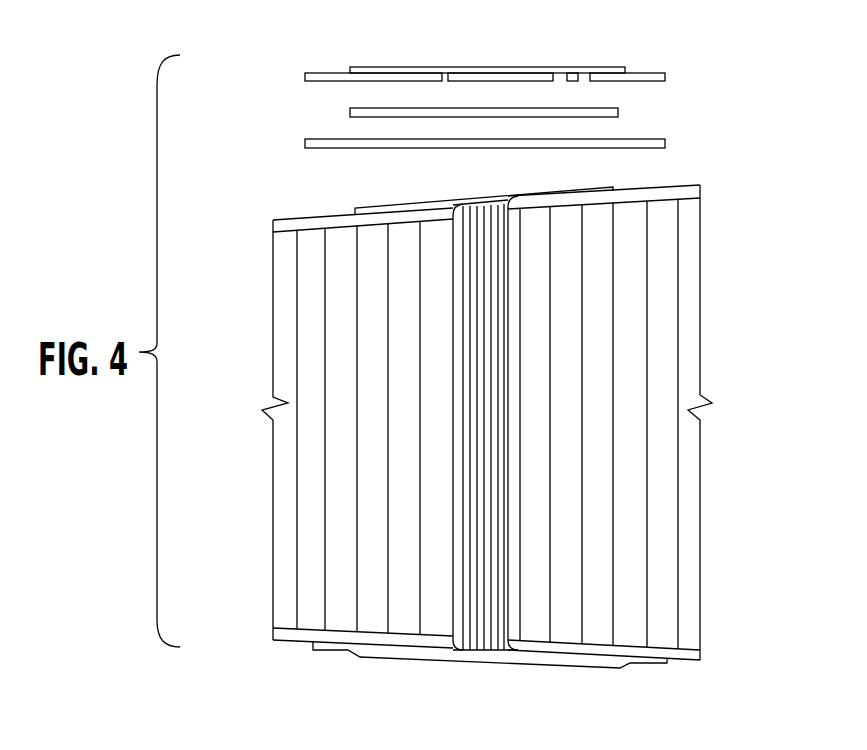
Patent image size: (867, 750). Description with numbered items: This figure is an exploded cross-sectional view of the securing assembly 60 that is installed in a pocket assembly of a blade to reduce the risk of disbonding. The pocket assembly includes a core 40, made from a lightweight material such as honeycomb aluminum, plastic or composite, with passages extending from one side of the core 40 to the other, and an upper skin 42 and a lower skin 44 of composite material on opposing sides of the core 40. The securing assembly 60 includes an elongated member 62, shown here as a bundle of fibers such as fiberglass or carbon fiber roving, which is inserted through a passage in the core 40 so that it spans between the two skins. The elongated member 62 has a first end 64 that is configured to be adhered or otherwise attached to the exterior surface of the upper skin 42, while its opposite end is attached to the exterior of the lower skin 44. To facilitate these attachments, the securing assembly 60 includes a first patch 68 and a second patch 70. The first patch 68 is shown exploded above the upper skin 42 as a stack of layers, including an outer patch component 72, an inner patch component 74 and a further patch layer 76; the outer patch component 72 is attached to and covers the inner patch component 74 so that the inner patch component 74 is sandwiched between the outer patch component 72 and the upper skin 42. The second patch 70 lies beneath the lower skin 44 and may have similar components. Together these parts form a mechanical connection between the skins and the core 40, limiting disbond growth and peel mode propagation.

The core 40 is at (680, 398).
The upper skin 42 is at (675, 184).
The lower skin 44 is at (297, 643).
The securing assembly 60 is at (485, 25).
The elongated member 62 is at (487, 518).
The first end 64 is at (410, 206).
The first patch 68 is at (283, 75).
The second patch 70 is at (607, 670).
The outer patch component 72 is at (568, 71).
The inner patch component 74 is at (592, 108).
The lower plate 76 is at (323, 139).